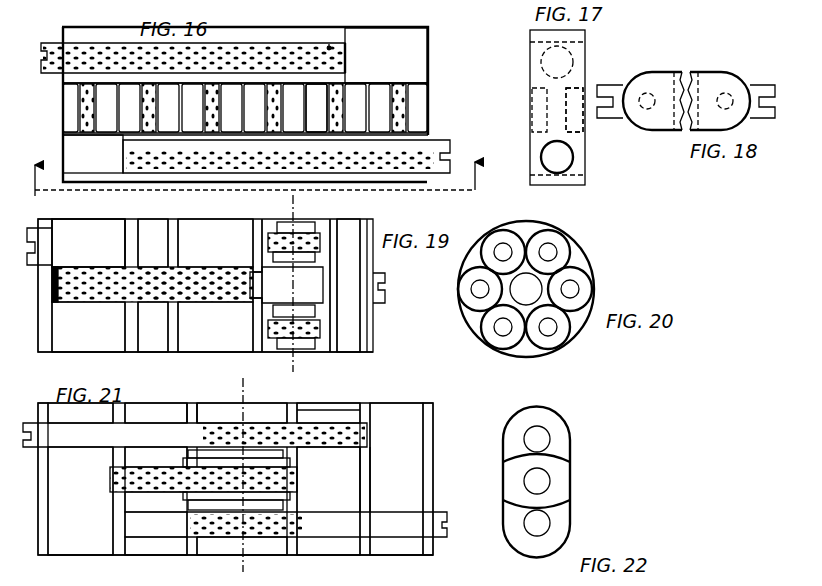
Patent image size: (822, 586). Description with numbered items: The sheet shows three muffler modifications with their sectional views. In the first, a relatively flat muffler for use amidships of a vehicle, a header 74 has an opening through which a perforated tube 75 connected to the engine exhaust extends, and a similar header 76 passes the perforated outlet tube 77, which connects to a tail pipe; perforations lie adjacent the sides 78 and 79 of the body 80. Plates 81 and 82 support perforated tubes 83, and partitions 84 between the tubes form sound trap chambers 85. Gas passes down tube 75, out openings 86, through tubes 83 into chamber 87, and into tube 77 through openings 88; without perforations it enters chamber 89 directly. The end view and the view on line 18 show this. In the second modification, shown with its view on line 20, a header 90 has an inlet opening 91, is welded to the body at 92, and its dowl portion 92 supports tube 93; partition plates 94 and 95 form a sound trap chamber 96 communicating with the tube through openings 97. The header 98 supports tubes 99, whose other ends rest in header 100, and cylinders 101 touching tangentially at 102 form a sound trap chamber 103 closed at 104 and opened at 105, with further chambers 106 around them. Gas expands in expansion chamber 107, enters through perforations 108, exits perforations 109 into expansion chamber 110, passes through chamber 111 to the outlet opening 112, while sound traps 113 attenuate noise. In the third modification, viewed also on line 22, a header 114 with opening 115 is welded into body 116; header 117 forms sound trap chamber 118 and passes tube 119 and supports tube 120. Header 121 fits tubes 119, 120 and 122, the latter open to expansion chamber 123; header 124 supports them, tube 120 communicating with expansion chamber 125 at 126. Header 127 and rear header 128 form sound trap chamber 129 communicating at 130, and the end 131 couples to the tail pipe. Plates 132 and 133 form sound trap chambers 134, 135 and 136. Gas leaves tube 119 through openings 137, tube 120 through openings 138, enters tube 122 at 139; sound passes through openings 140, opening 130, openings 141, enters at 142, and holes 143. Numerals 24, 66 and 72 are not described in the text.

In FIG. 16, the section line 18— 18 is at (253, 168).
In FIG. 19, the section line 20— 20 is at (288, 285).
In FIG. 21, the section line 22— 22 is at (238, 481).
In FIG. 21, the reference 24 is at (125, 578).
In FIG. 16, the reference 66 is at (316, 1).
In FIG. 16, the plate 72 is at (326, 135).
In FIG. 16, the header 74 is at (62, 107).
In FIG. 16, the perforated tube 75 is at (41, 70).
In FIG. 16, the header 76 is at (428, 109).
In FIG. 16, the perforated tube 77 is at (440, 146).
In FIG. 16, the side of body 78 is at (236, 42).
In FIG. 16, the side of body 79 is at (288, 178).
In FIG. 16, the body 80 is at (378, 40).
In FIG. 16, the plate 81 is at (135, 83).
In FIG. 17, the plate 81 is at (577, 80).
In FIG. 17, the plate 82 is at (578, 138).
In FIG. 18, the plate 82 is at (686, 101).
In FIG. 16, the perforated tube 83 is at (157, 103).
In FIG. 16, the partition 84 is at (118, 97).
In FIG. 16, the sound trap chamber 85 is at (314, 92).
In FIG. 16, the opening 86 is at (329, 44).
In FIG. 16, the chamber 87 is at (80, 176).
In FIG. 16, the opening 88 is at (232, 166).
In FIG. 16, the chamber 89 is at (400, 61).
In FIG. 19, the header 90 is at (52, 326).
In FIG. 19, the opening 91 is at (66, 219).
In FIG. 19, the dowl portion 92 is at (30, 219).
In FIG. 19, the tube 93 is at (93, 310).
In FIG. 19, the partition plate 94 is at (90, 241).
In FIG. 19, the partition plate 95 is at (172, 236).
In FIG. 19, the sound trap chamber 96 is at (147, 230).
In FIG. 19, the opening 97 is at (143, 308).
In FIG. 19, the header 98 is at (262, 232).
In FIG. 19, the tube 99 is at (293, 232).
In FIG. 19, the header 100 is at (318, 345).
In FIG. 19, the cylinder 101 is at (290, 290).
In FIG. 20, the cylinder 101 is at (515, 230).
In FIG. 20, the tangential contact point 102 is at (568, 260).
In FIG. 19, the sound trap chamber 103 is at (318, 311).
In FIG. 20, the sound trap chamber 103 is at (500, 308).
In FIG. 19, the closed end 104 is at (328, 290).
In FIG. 19, the open end 105 is at (252, 305).
In FIG. 20, the sound trap chamber 106 is at (516, 360).
In FIG. 19, the expansion chamber 107 is at (104, 349).
In FIG. 19, the perforations 108 is at (92, 272).
In FIG. 19, the perforations 109 is at (204, 272).
In FIG. 19, the expansion chamber 110 is at (222, 232).
In FIG. 19, the chamber 111 is at (352, 230).
In FIG. 19, the outlet opening 112 is at (384, 283).
In FIG. 19, the sound trap 113 is at (280, 350).
In FIG. 20, the sound trap 113 is at (580, 284).
In FIG. 21, the header 114 is at (48, 481).
In FIG. 21, the opening 115 is at (23, 447).
In FIG. 21, the body 116 is at (76, 562).
In FIG. 21, the header 117 is at (116, 526).
In FIG. 21, the sound trap chamber 118 is at (60, 547).
In FIG. 21, the tube 119 is at (138, 422).
In FIG. 21, the tube 120 is at (142, 466).
In FIG. 21, the header 121 is at (196, 413).
In FIG. 21, the tube 122 is at (213, 566).
In FIG. 21, the expansion chamber 123 is at (135, 558).
In FIG. 21, the header 124 is at (305, 408).
In FIG. 21, the expansion chamber 125 is at (330, 558).
In FIG. 21, the communication point 126 is at (298, 480).
In FIG. 21, the header 127 is at (380, 407).
In FIG. 21, the rear header 128 is at (425, 435).
In FIG. 21, the sound trap chamber 129 is at (410, 420).
In FIG. 21, the opening 130 is at (370, 440).
In FIG. 21, the end of tube 131 is at (448, 521).
In FIG. 22, the plate 132 is at (563, 461).
In FIG. 21, the plate 133 is at (286, 458).
In FIG. 22, the plate 133 is at (560, 500).
In FIG. 21, the sound trap chamber 134 is at (283, 556).
In FIG. 22, the sound trap chamber 134 is at (560, 523).
In FIG. 21, the sound trap chamber 135 is at (258, 413).
In FIG. 22, the sound trap chamber 135 is at (555, 423).
In FIG. 22, the sound trap chamber 136 is at (560, 480).
In FIG. 21, the opening 137 is at (318, 423).
In FIG. 21, the opening 138 is at (140, 508).
In FIG. 21, the entry point 139 is at (180, 522).
In FIG. 21, the opening 140 is at (234, 420).
In FIG. 21, the opening 141 is at (286, 494).
In FIG. 21, the entry point 142 is at (110, 480).
In FIG. 21, the hole 143 is at (290, 523).